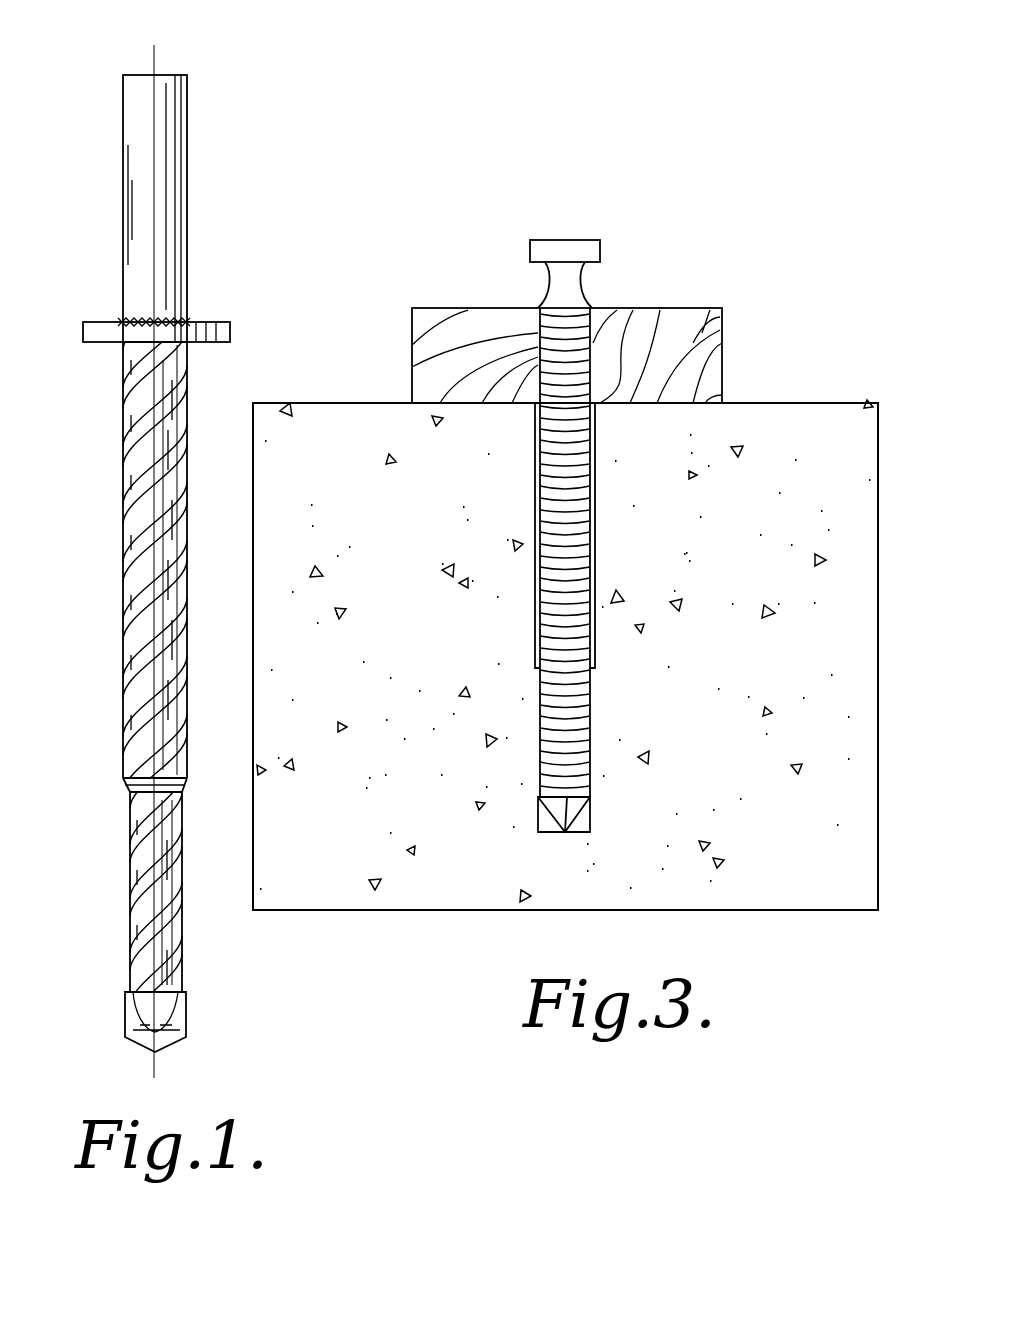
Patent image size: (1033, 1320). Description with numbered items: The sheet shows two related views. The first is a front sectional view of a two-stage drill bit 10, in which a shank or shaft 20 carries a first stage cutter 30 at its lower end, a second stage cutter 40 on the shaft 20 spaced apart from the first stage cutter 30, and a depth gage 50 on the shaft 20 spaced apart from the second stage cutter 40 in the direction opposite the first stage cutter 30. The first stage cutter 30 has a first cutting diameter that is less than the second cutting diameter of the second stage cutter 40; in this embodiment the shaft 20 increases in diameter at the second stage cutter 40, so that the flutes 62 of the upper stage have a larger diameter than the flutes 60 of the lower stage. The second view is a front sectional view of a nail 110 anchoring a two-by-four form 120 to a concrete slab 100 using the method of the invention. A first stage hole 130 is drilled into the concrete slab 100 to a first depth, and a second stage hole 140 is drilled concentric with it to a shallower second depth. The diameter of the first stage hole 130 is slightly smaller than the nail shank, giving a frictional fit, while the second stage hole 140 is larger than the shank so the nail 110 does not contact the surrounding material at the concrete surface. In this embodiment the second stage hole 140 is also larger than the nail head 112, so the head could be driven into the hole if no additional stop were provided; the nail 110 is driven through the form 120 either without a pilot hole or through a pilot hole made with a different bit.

In FIG. 1, the drill bit 10 is at (90, 605).
In FIG. 1, the shank/shaft 20 is at (128, 540).
In FIG. 1, the first stage cutter 30 is at (128, 1015).
In FIG. 1, the second stage cutter 40 is at (128, 785).
In FIG. 1, the depth gage 50 is at (83, 326).
In FIG. 1, the flutes 60 is at (140, 882).
In FIG. 1, the flutes 62 is at (128, 425).
In FIG. 3, the concrete slab 100 is at (455, 883).
In FIG. 3, the nail 110 is at (559, 509).
In FIG. 3, the nail head 112 is at (560, 250).
In FIG. 3, the form 120 is at (670, 313).
In FIG. 3, the first stage hole 130 is at (585, 825).
In FIG. 3, the second stage hole 140 is at (598, 595).